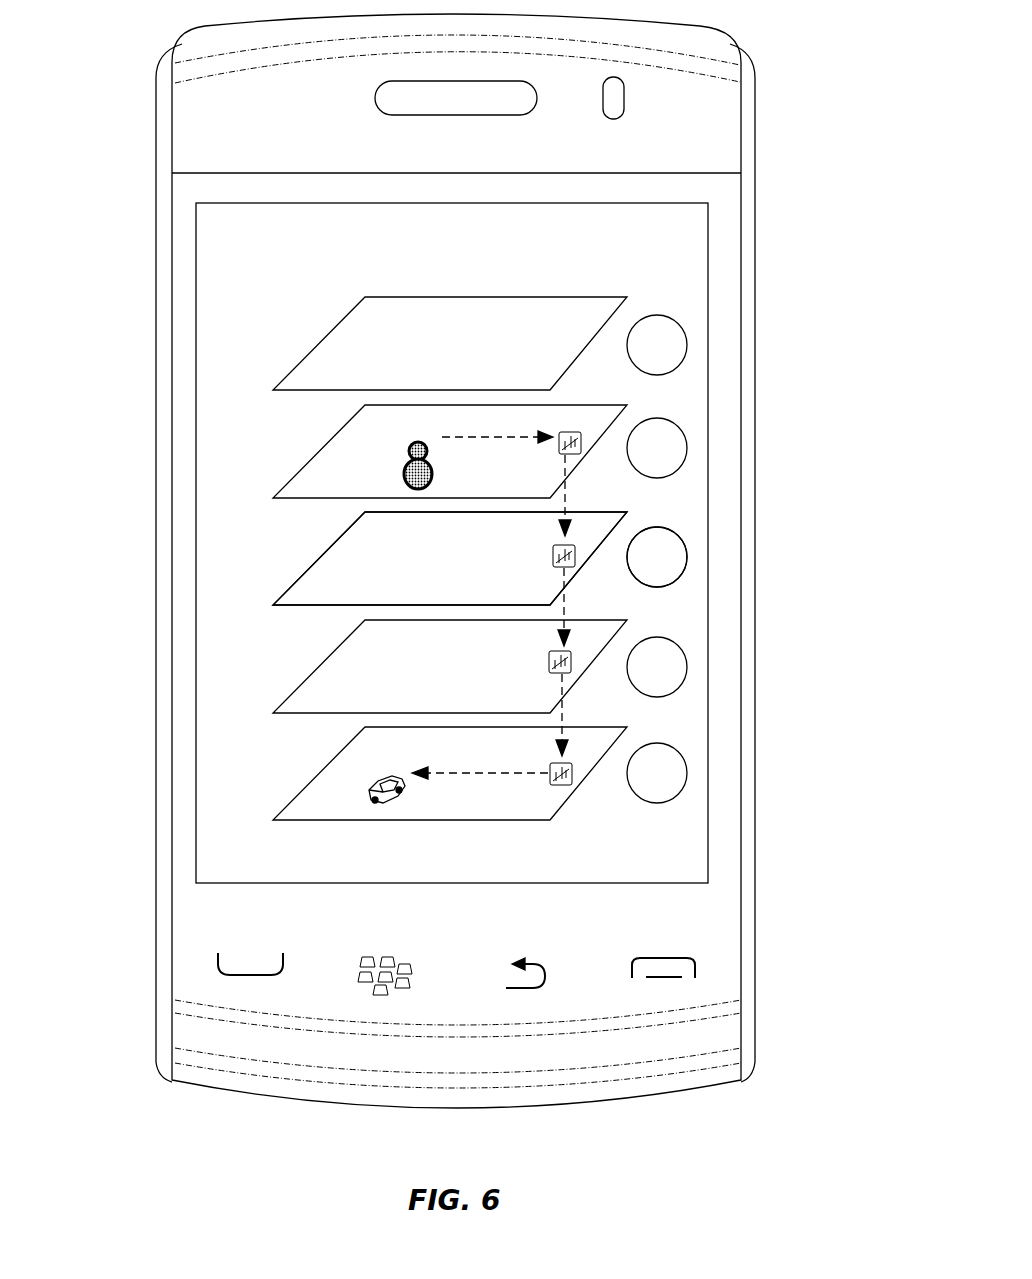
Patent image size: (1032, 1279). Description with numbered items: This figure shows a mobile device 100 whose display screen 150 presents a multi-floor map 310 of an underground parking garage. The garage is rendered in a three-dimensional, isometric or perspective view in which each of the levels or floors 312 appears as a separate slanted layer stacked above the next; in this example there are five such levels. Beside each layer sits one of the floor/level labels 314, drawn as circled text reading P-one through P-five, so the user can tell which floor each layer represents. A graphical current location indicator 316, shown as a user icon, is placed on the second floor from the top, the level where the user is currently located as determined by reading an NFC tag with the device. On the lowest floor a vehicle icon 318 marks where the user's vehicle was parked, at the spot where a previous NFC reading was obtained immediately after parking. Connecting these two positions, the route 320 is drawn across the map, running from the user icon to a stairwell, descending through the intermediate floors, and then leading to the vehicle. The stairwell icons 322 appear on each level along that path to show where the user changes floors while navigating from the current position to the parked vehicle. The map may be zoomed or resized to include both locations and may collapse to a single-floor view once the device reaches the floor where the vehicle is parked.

The mobile device 100 is at (795, 115).
The display screen 150 is at (708, 313).
The multi-floor map 310 is at (242, 425).
The levels or floors 312 is at (310, 562).
The floor/level labels 314 is at (687, 546).
The current location indicator 316 is at (404, 478).
The vehicle icon 318 is at (367, 793).
The route 320 is at (553, 606).
The stairwell icons 322 is at (545, 665).